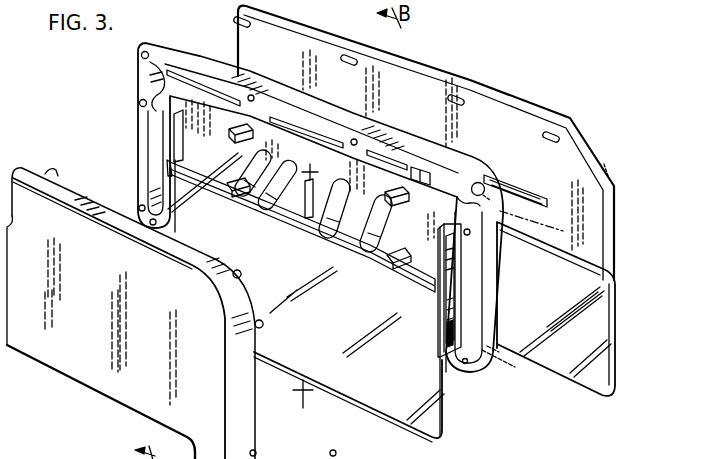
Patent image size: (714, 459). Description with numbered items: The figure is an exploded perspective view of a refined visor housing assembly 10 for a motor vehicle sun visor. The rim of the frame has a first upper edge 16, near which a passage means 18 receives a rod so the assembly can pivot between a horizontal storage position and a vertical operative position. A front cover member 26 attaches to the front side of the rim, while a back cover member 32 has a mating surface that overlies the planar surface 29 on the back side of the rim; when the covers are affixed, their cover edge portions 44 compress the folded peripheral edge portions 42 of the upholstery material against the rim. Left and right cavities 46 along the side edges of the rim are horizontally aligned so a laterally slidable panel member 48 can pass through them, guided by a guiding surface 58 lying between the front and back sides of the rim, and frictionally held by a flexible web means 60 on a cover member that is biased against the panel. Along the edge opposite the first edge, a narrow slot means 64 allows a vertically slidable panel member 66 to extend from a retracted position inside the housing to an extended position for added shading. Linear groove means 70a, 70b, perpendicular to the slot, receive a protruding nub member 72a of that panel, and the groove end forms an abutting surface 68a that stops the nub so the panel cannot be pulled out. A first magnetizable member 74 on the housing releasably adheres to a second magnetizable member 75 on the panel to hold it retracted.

The visor housing assembly 10 is at (460, 62).
The first upper edge 16 is at (183, 52).
The passage means 18 is at (481, 180).
The front cover member 26 is at (503, 90).
The planar surface 29 is at (470, 370).
The back cover member 32 is at (93, 380).
The peripheral edge portions 42 is at (346, 440).
The cover edge portions 44 is at (612, 166).
The left and right cavities 46 is at (490, 326).
The laterally slidable panel member 48 is at (560, 362).
The guiding surface 58 is at (196, 134).
The web means 60 is at (538, 201).
The slot means 64 is at (175, 232).
The vertically slidable panel member 66 is at (446, 419).
The abutting surface 68a is at (445, 330).
The linear groove means 70a is at (452, 260).
The linear groove means 70b is at (292, 208).
The protruding nub member 72a is at (455, 306).
The first magnetizable member 74 is at (231, 142).
The second magnetizable member 75 is at (238, 200).